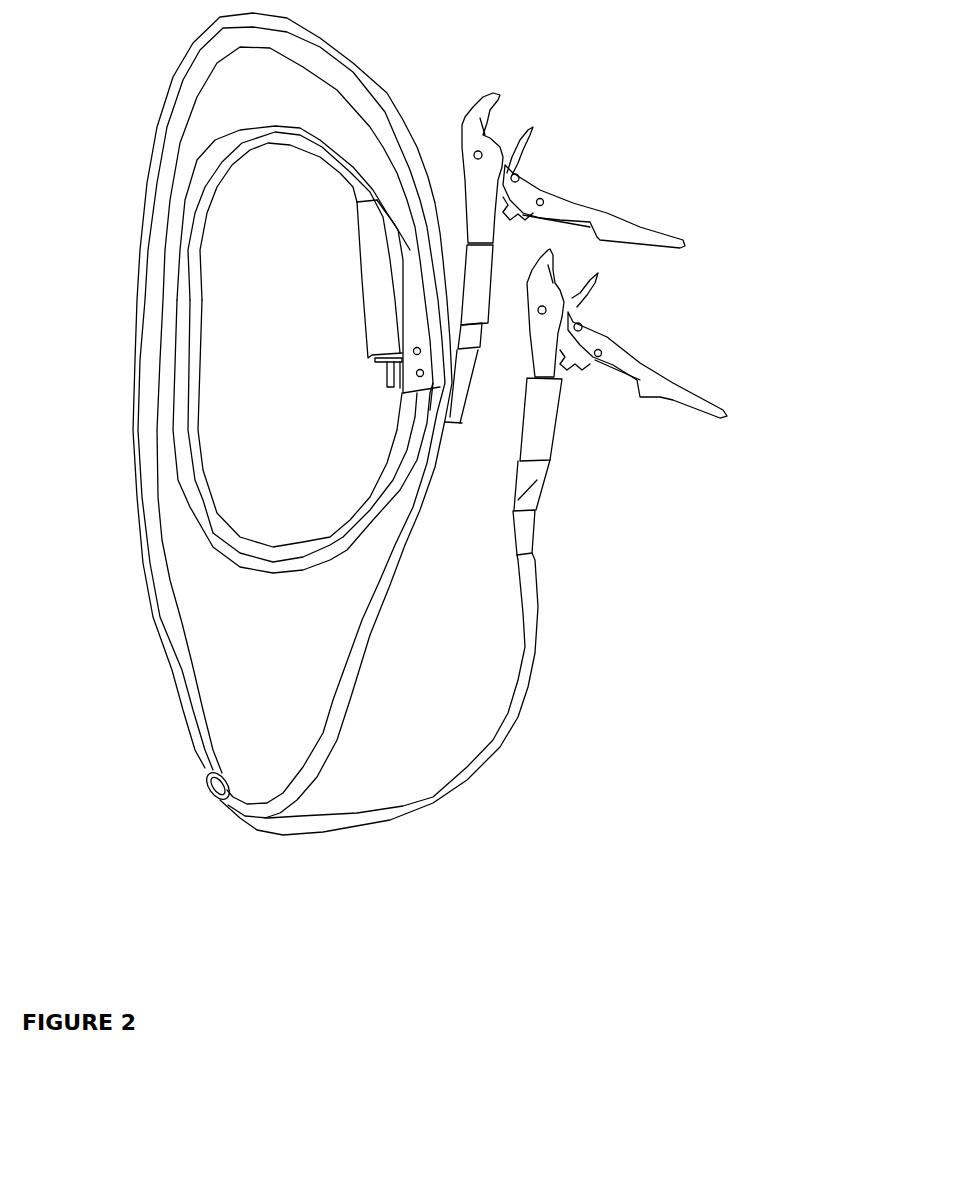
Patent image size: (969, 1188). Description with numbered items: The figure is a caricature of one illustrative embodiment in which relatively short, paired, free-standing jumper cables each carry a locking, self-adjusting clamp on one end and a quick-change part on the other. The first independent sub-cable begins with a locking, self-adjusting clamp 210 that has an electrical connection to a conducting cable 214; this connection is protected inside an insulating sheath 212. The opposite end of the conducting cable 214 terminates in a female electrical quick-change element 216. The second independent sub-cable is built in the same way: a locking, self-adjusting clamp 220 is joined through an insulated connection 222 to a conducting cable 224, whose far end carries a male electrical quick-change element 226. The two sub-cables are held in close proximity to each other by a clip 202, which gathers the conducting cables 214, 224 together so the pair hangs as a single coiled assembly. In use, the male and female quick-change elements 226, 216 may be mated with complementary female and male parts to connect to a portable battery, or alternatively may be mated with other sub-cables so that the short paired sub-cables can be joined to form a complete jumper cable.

The clip 202 is at (247, 474).
The locking, self-adjusting clamp 210 is at (676, 333).
The insulating sheath 212 is at (630, 555).
The conducting cable 214 is at (478, 606).
The female electrical quick-change element 216 is at (326, 438).
The locking, self-adjusting clamp 220 is at (628, 170).
The insulated connection 222 is at (600, 361).
The conducting cable 224 is at (128, 827).
The male electrical quick-change element 226 is at (325, 339).